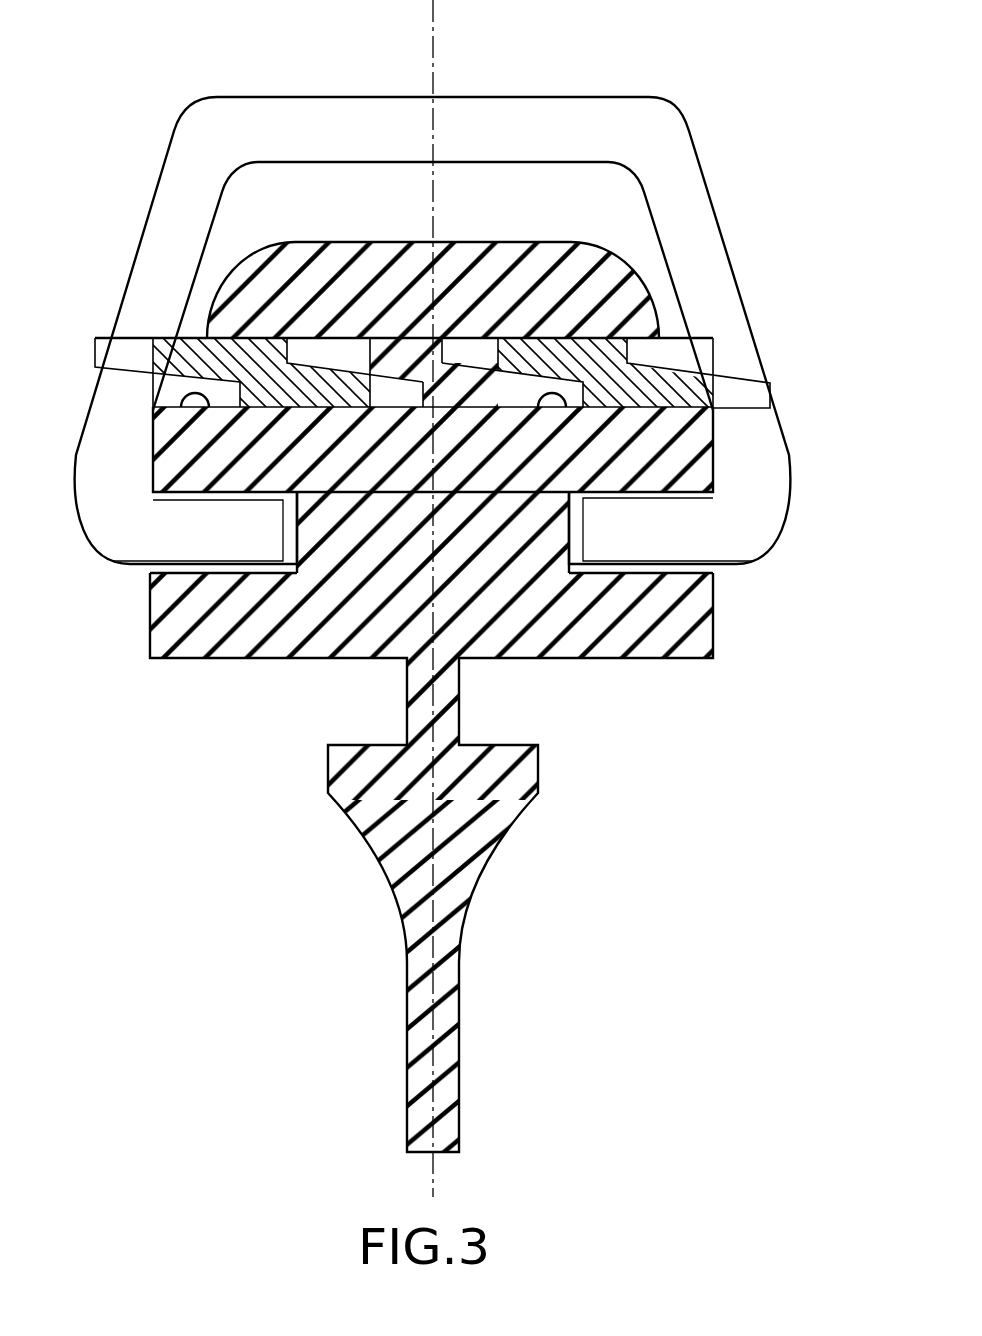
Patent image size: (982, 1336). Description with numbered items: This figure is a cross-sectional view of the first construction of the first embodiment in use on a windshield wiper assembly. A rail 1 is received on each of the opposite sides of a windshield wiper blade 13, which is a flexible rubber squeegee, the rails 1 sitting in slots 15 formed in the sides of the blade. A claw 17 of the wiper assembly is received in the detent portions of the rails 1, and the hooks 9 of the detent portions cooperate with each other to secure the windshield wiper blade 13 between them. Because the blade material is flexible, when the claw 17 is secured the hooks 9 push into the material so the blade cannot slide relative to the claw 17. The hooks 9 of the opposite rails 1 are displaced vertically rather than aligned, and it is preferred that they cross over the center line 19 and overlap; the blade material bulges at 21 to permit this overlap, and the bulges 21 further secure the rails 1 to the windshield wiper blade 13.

The rail 1 is at (195, 358).
The hooks 9 is at (120, 362).
The windshield wiper blade 13 is at (576, 658).
The slots 15 is at (188, 396).
The claw 17 is at (275, 114).
The center line 19 is at (433, 52).
The bulges 21 is at (390, 365).